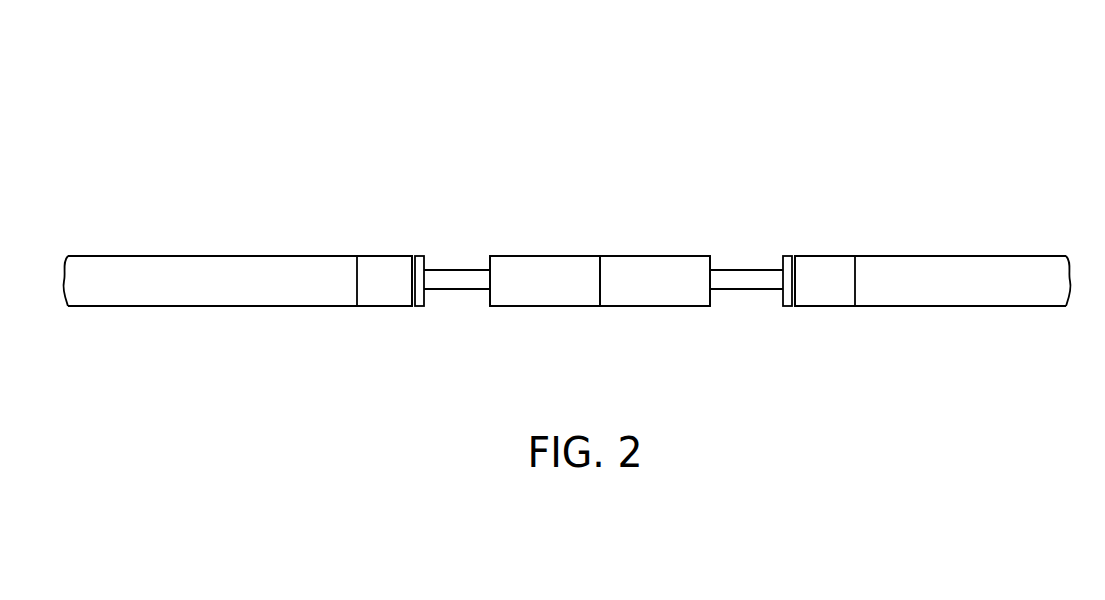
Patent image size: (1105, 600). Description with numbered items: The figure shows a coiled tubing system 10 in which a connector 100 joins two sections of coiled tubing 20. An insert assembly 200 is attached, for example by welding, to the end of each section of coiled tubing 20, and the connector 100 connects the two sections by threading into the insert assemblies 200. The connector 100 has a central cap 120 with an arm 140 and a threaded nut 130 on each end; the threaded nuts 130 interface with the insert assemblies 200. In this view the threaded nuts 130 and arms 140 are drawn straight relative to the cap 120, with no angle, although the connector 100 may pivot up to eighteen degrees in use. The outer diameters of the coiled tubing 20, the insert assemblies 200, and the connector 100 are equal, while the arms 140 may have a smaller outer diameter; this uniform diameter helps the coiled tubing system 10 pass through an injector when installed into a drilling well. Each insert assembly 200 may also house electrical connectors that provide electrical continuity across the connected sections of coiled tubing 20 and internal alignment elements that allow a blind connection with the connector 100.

The coiled tubing system 10 is at (836, 72).
The coiled tubing 20 is at (214, 306).
The connector 100 is at (589, 191).
The cap 120 is at (513, 272).
The threaded nut 130 is at (417, 307).
The arm 140 is at (453, 268).
The insert assembly 200 is at (383, 255).